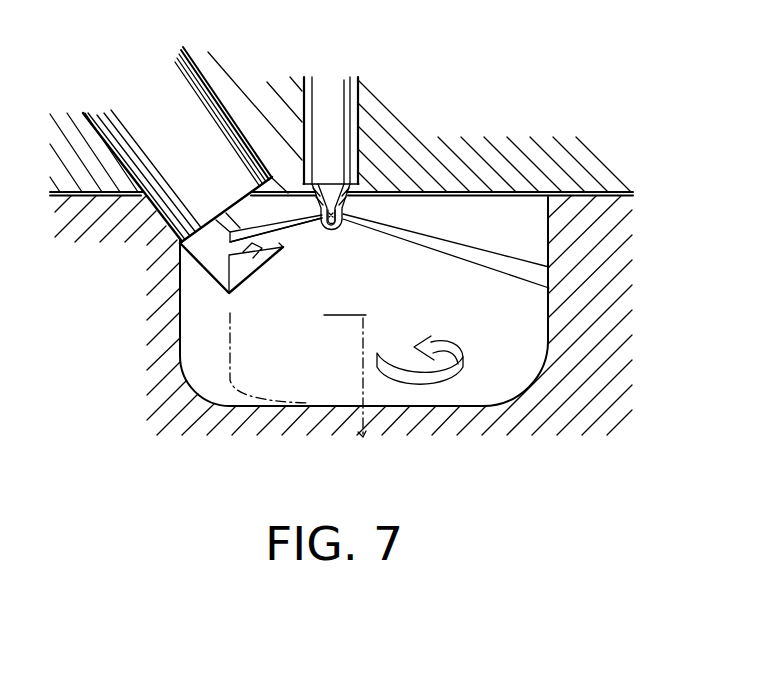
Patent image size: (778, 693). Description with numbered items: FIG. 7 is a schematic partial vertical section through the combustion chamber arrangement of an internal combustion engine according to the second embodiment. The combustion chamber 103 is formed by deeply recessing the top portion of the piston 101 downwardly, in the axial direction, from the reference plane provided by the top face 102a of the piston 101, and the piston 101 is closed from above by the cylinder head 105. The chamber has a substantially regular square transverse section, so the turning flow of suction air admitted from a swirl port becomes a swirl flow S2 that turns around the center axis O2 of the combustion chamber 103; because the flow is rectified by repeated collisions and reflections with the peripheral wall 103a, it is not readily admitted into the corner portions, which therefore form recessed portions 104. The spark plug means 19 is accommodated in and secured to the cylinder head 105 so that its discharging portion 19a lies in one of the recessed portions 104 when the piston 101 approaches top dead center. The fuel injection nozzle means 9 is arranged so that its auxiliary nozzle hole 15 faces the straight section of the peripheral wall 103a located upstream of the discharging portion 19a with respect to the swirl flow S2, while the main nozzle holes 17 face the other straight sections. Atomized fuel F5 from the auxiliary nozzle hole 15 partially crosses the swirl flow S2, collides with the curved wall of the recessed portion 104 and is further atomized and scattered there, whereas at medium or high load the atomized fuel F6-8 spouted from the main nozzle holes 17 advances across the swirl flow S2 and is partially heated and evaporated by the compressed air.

The fuel injection nozzle means 9 is at (347, 147).
The auxiliary nozzle hole 15 is at (317, 220).
The main nozzle holes 17 is at (345, 218).
The spark plug means 19 is at (110, 113).
The discharging portion 19a is at (253, 288).
The piston 101 is at (557, 317).
The top face 102a is at (573, 197).
The combustion chamber 103 is at (345, 364).
The peripheral wall 103a is at (548, 342).
The recessed portion 104 is at (193, 310).
The cylinder head 105 is at (475, 166).
The atomized fuel F5 is at (291, 235).
The atomized fuel F6-8 is at (420, 243).
The swirl flow S2 is at (450, 378).
The center axis O2 is at (365, 437).